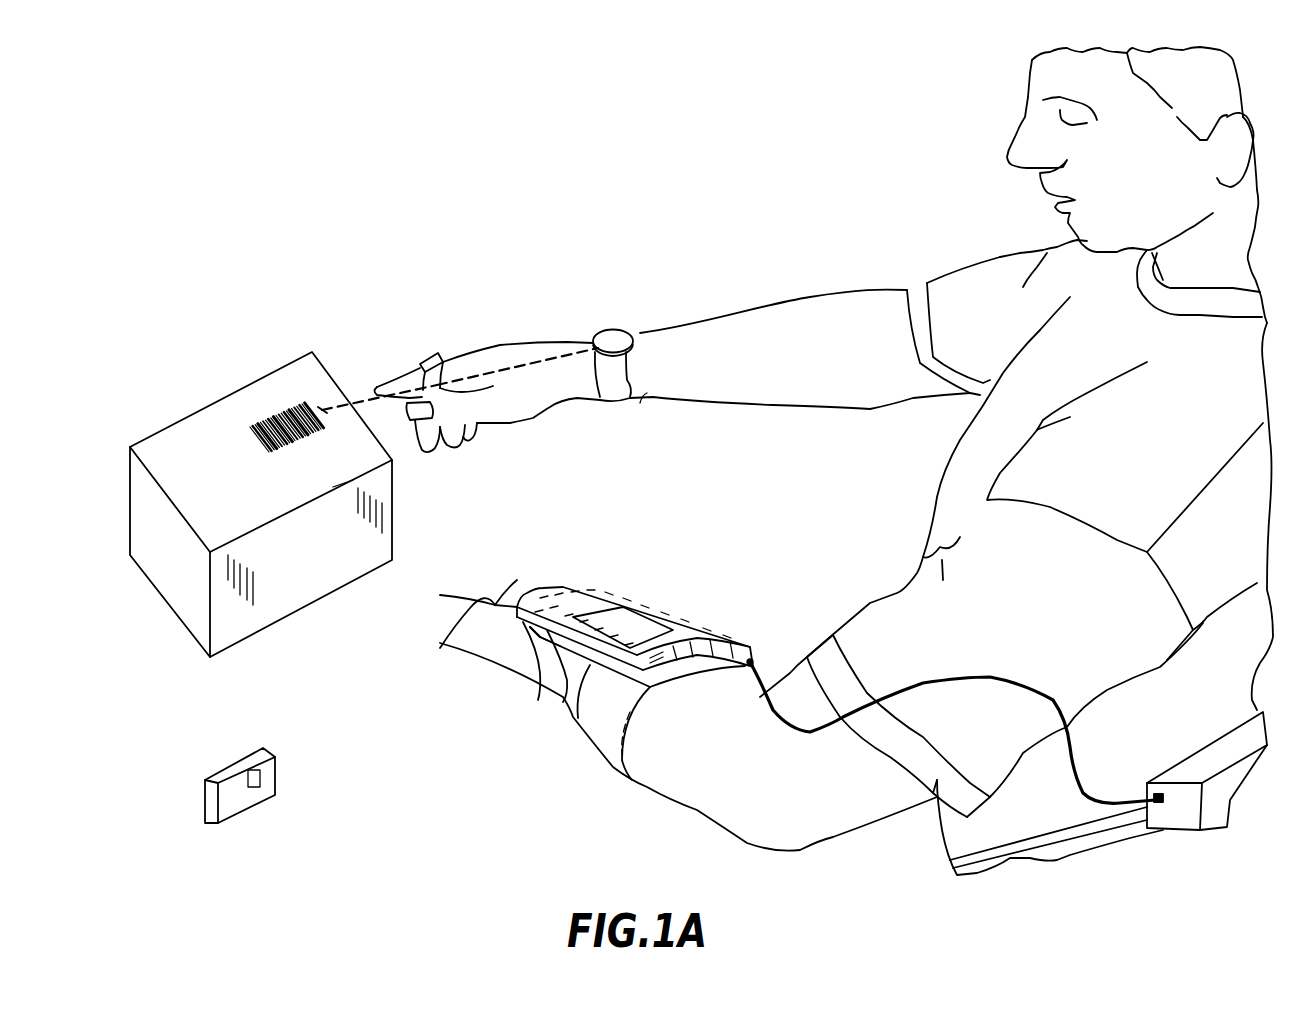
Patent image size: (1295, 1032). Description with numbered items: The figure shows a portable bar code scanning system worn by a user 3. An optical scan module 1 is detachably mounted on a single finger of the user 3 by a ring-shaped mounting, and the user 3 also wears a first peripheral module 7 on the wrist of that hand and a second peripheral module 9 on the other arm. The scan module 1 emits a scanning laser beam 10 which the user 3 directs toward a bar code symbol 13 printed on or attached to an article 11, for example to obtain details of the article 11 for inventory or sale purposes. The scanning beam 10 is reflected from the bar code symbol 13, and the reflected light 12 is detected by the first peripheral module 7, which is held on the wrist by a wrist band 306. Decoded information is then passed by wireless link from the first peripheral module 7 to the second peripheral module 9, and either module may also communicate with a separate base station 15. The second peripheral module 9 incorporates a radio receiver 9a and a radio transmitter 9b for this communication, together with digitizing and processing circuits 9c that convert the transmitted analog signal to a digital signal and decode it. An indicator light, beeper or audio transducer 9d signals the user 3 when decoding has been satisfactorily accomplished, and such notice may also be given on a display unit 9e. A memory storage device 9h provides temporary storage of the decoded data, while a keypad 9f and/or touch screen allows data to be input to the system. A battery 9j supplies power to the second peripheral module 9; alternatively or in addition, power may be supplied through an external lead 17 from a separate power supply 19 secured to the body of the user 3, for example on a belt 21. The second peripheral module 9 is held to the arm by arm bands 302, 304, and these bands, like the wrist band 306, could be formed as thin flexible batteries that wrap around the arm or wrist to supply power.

The optical scan module 1 is at (433, 353).
The user 3 is at (971, 248).
The first peripheral module 7 is at (612, 310).
The second peripheral module 9 is at (658, 598).
The radio receiver 9a is at (730, 647).
The radio transmitter 9b is at (700, 660).
The digitizing and processing circuits 9c is at (675, 661).
The indicator light, beeper or audio transducer 9d is at (540, 638).
The display unit 9e is at (540, 637).
The keypad 9f is at (575, 593).
The memory storage device 9h is at (640, 687).
The battery 9j is at (515, 612).
The scanning laser beam 10 is at (360, 393).
The article 11 is at (213, 403).
The reflected light 12 is at (520, 367).
The bar code symbol 13 is at (285, 403).
The base station 15 is at (247, 812).
The external lead 17 is at (1010, 678).
The power supply 19 is at (1183, 753).
The belt 21 is at (1093, 842).
The arm band 302 is at (536, 703).
The arm band 304 is at (620, 767).
The wrist band 306 is at (640, 407).